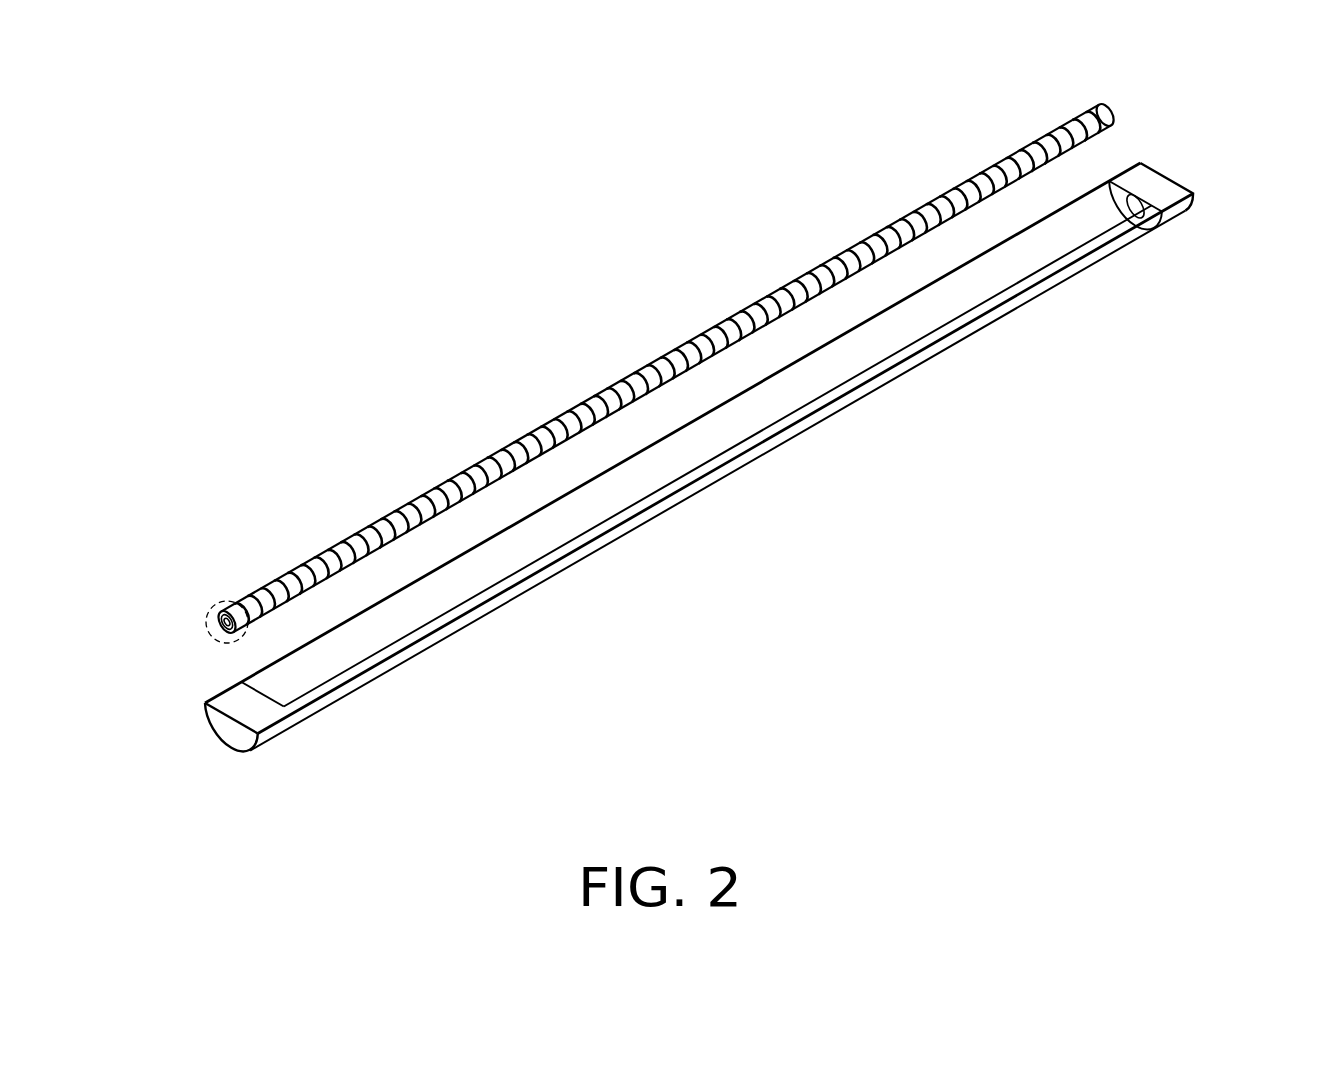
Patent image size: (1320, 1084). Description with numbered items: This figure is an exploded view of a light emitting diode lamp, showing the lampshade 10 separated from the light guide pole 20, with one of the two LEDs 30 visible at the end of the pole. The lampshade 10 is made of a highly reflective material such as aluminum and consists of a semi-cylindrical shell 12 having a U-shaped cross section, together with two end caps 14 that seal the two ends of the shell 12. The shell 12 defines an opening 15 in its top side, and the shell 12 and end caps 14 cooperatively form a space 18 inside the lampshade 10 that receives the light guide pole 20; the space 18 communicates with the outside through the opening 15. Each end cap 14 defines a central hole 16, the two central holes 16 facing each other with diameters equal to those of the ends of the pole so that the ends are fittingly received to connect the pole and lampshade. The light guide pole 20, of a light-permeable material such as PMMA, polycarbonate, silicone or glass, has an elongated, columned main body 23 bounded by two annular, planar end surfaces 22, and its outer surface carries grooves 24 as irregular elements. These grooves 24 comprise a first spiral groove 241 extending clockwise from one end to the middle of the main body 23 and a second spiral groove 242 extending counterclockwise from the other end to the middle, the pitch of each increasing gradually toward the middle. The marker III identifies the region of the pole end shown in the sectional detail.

The lampshade 10 is at (742, 430).
The semi-cylindrical shell 12 is at (1045, 287).
The end caps 14 is at (1162, 190).
The opening 15 is at (1086, 210).
The central holes 16 is at (1136, 208).
The space 18 is at (360, 645).
The light guide pole 20 is at (609, 398).
The end surfaces 22 is at (222, 620).
The main body 23 is at (422, 492).
The grooves 24 is at (667, 368).
The first spiral groove 241 is at (533, 425).
The second spiral groove 242 is at (826, 245).
The LEDs 30 is at (223, 630).
The section III indicator III is at (230, 600).